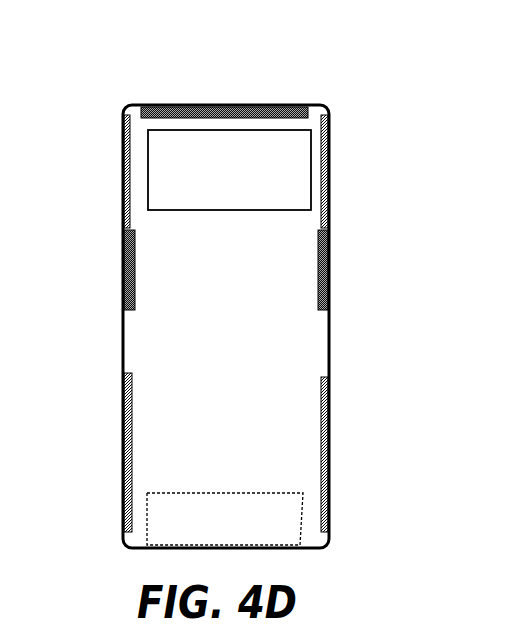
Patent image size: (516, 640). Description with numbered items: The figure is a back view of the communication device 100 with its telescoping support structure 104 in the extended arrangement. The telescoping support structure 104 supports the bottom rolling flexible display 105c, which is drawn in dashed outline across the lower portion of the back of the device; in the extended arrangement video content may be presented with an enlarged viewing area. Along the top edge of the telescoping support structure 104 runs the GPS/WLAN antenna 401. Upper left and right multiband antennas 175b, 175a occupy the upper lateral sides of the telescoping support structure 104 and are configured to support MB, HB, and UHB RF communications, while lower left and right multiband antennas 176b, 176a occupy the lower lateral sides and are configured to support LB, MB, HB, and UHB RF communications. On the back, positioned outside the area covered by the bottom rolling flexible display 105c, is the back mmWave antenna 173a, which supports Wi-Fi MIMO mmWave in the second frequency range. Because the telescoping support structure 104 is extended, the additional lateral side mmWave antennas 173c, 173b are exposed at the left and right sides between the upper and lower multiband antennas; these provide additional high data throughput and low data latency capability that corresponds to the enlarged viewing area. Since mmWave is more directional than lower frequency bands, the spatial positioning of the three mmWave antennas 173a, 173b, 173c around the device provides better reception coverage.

The communication device 100 is at (68, 116).
The telescoping support structure 104 is at (330, 347).
The GPS/WLAN antenna 401 is at (142, 91).
The upper right multiband antenna 175a is at (338, 220).
The upper left multiband antenna 175b is at (118, 220).
The back mmWave antenna 173a is at (210, 201).
The lateral side mmWave antenna 173b is at (338, 310).
The lateral side mmWave antenna 173c is at (117, 310).
The lower right multiband antenna 176a is at (338, 532).
The lower left multiband antenna 176b is at (116, 532).
The bottom rolling flexible display 105c is at (246, 530).